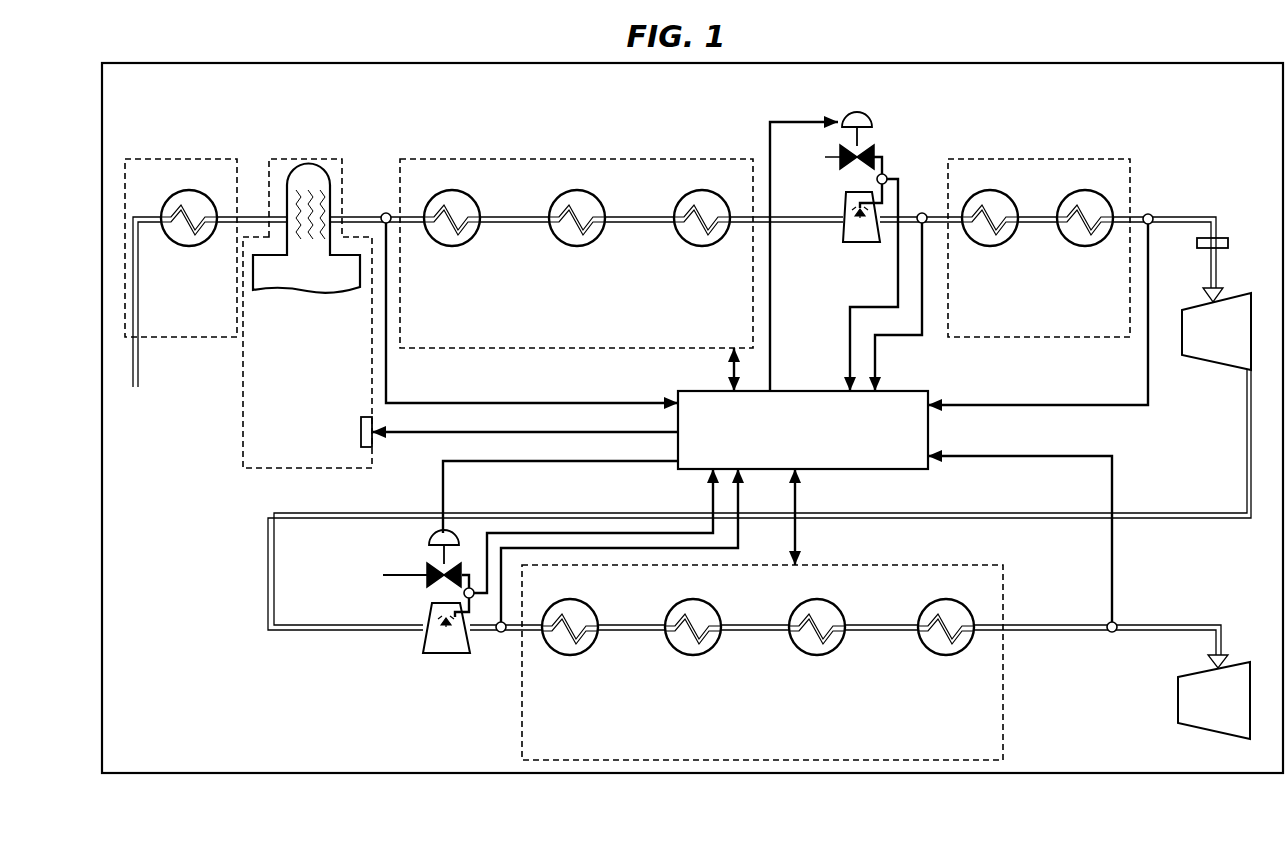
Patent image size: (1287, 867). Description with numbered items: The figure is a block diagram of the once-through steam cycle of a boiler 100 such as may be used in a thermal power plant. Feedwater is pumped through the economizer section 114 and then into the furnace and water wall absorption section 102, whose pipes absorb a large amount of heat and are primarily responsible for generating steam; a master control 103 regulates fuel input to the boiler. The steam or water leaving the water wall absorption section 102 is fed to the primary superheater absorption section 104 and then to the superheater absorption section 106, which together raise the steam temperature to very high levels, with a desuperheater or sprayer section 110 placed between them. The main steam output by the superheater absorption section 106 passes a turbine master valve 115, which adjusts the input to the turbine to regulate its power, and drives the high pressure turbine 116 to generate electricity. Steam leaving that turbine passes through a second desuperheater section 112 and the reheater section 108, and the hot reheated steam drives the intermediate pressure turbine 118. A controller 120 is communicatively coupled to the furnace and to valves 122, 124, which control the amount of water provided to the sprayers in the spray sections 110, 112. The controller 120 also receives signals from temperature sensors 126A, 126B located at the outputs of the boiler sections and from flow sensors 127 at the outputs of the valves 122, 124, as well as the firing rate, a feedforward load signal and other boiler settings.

The boiler 100 is at (224, 785).
The water wall absorption section 102 is at (313, 159).
The master control 103 is at (373, 446).
The primary superheater absorption section 104 is at (572, 159).
The superheater absorption section 106 is at (1082, 159).
The reheater section 108 is at (1003, 588).
The desuperheater section 110 is at (843, 236).
The desuperheater section 112 is at (423, 645).
The economizer section 114 is at (165, 159).
The turbine master valve 115 is at (1228, 243).
The high pressure turbine 116 is at (1230, 298).
The intermediate pressure turbine 118 is at (1242, 661).
The controller 120 is at (910, 391).
The valve 122 is at (873, 148).
The valve 124 is at (428, 540).
The temperature sensor 126A is at (386, 213).
The temperature sensor 126B is at (1148, 214).
The flow sensor 127 is at (886, 175).